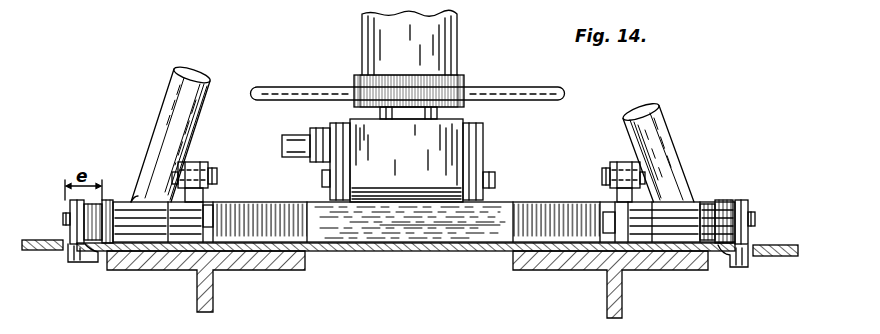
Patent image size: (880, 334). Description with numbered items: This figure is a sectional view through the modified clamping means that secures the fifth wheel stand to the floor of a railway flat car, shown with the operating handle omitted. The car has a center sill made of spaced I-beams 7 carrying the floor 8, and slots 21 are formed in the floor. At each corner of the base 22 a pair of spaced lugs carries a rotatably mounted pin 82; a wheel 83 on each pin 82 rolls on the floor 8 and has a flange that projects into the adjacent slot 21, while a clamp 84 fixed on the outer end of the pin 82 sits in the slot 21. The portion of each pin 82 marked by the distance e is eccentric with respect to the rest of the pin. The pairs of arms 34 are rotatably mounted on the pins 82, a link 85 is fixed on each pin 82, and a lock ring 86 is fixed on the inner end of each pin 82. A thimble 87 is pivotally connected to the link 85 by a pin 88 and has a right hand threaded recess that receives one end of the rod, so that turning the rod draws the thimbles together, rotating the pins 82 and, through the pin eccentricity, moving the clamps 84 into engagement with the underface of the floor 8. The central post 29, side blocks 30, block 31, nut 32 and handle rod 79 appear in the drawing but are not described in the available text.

The I-beams 7 is at (214, 293).
The floor 8 is at (362, 244).
The slot 21 is at (66, 248).
The base 22 is at (484, 232).
The column 29 is at (370, 28).
The side block 30 is at (338, 195).
The center block 31 is at (406, 160).
The nut 32 is at (497, 183).
The arms 34 is at (178, 92).
The handle rod 79 is at (264, 87).
The pin 82 is at (63, 218).
The wheel 83 is at (109, 200).
The clamp 84 is at (80, 263).
The link 85 is at (196, 162).
The lock ring 86 is at (213, 207).
The thimble 87 is at (180, 163).
The pin 88 is at (218, 176).